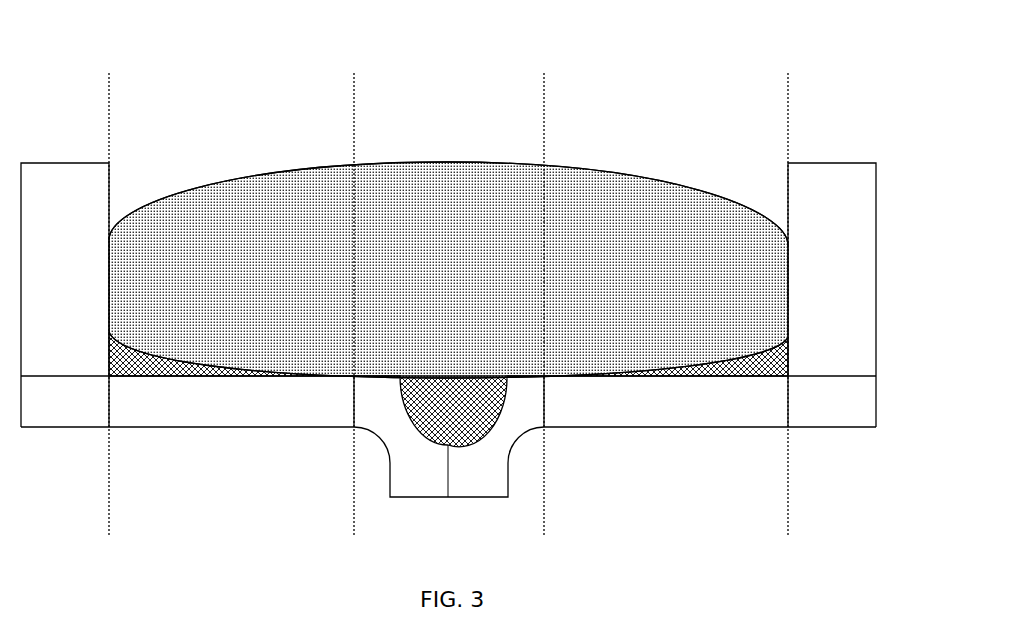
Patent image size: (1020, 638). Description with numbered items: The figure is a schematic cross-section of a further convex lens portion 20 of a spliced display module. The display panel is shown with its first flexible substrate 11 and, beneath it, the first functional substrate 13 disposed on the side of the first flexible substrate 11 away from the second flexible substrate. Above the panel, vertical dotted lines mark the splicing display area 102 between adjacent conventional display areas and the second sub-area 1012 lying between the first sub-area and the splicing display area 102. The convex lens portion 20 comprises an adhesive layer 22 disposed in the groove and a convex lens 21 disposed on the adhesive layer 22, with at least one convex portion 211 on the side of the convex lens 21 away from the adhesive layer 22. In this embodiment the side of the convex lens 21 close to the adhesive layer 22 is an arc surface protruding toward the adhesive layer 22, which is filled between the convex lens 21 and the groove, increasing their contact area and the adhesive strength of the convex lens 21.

The first flexible substrate 11 is at (198, 405).
The first functional substrate 13 is at (819, 340).
The splicing display area 102 is at (445, 108).
The second sub-area 1012 is at (232, 108).
The convex lens portion 20 is at (448, 291).
The convex lens 21 is at (448, 280).
The convex portion 211 is at (592, 200).
The adhesive layer 22 is at (463, 407).